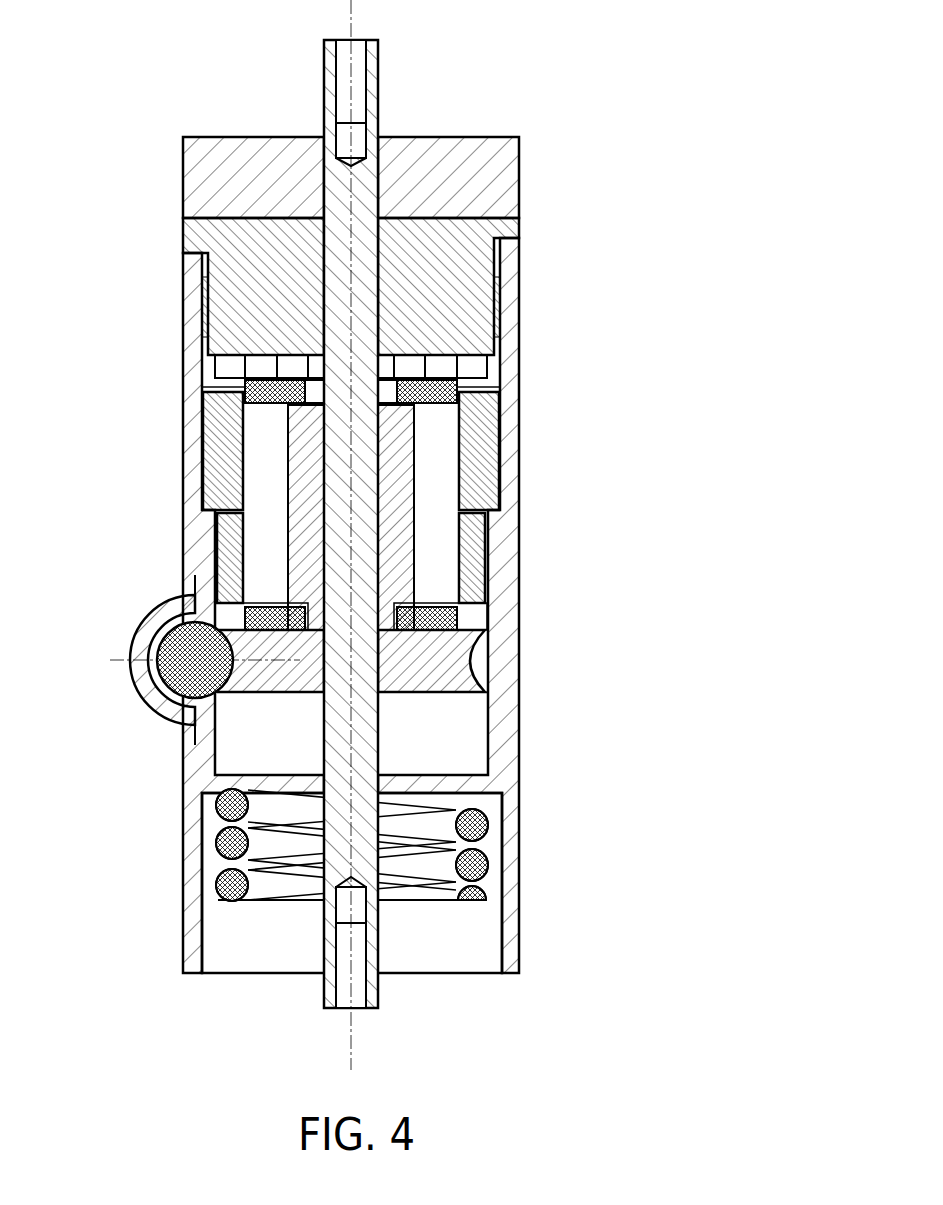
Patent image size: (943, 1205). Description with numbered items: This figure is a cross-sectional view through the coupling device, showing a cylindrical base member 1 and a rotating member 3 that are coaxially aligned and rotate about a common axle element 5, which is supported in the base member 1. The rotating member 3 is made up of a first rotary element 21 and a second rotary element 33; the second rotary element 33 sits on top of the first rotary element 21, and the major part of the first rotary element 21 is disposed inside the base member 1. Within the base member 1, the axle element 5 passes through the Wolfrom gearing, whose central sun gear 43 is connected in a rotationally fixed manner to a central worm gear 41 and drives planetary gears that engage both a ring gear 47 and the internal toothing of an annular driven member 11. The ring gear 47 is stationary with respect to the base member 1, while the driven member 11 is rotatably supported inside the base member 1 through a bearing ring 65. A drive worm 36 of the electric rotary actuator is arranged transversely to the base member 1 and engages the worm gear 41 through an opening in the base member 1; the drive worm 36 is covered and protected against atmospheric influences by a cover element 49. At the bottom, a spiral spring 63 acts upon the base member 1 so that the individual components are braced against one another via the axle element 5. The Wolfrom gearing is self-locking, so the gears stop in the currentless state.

The base member 1 is at (522, 746).
The rotating member 3 is at (434, 246).
The axle element 5 is at (378, 70).
The driven member 11 is at (520, 476).
The first rotary element 21 is at (519, 225).
The second rotary element 33 is at (519, 175).
The drive worm 36 is at (165, 645).
The worm gear 41 is at (276, 694).
The sun gear 43 is at (377, 523).
The ring gear 47 is at (487, 553).
The cover element 49 is at (142, 701).
The spiral spring 63 is at (260, 898).
The bearing ring 65 is at (202, 311).